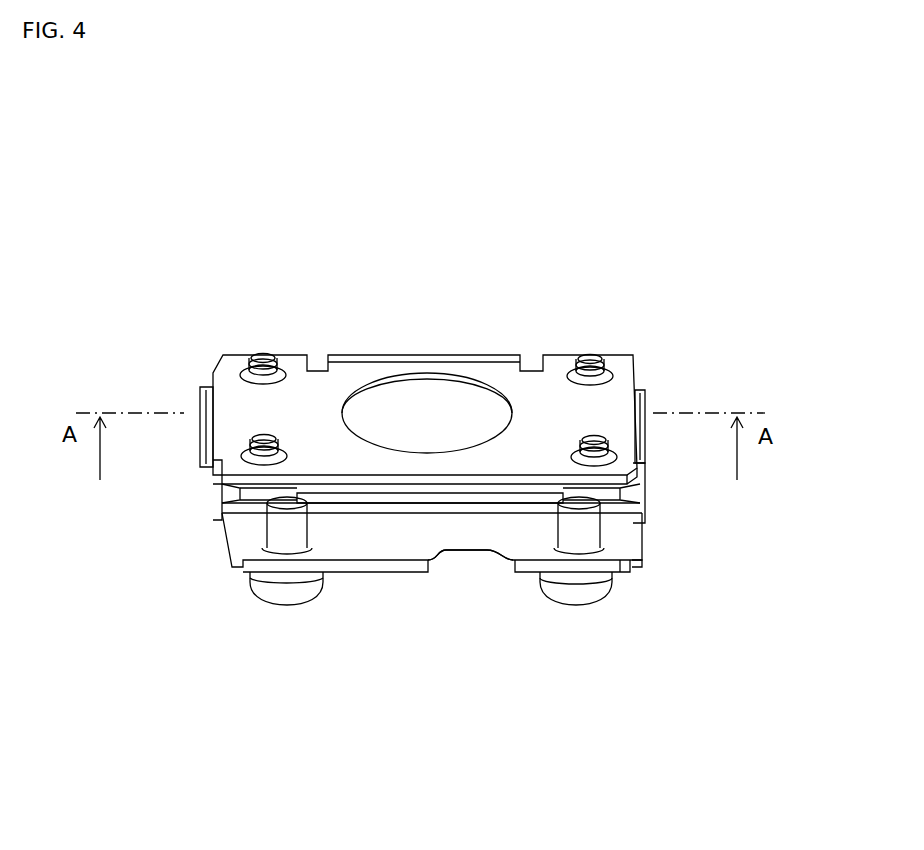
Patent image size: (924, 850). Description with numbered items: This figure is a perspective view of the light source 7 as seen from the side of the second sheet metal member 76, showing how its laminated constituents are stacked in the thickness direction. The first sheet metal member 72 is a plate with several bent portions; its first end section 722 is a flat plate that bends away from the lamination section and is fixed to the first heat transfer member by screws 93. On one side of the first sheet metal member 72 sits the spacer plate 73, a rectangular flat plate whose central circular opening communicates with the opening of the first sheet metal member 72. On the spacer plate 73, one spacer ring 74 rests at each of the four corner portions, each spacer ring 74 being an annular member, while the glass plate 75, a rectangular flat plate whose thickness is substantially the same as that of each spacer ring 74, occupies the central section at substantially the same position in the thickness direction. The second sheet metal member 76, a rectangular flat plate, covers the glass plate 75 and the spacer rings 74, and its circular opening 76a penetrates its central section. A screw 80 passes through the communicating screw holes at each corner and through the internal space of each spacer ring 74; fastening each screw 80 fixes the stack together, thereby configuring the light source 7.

The light source 7 is at (660, 308).
The first sheet metal member 72 is at (392, 572).
The first end section 722 is at (430, 545).
The spacer plate 73 is at (617, 507).
The spacer ring 74 is at (260, 487).
The glass plate 75 is at (503, 490).
The second sheet metal member 76 is at (313, 407).
The opening 76a is at (425, 380).
The screw 80 is at (262, 437).
The screw 93 is at (275, 592).